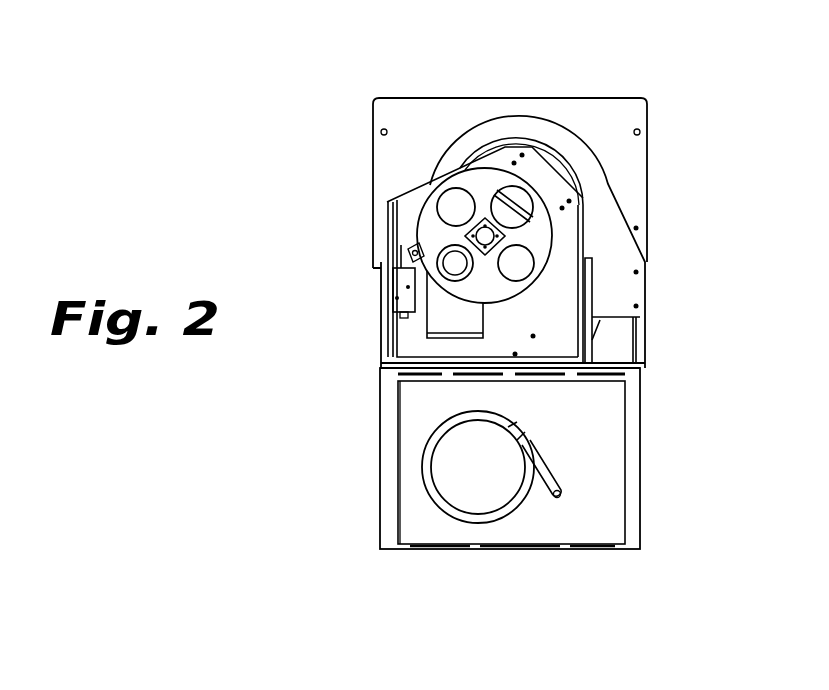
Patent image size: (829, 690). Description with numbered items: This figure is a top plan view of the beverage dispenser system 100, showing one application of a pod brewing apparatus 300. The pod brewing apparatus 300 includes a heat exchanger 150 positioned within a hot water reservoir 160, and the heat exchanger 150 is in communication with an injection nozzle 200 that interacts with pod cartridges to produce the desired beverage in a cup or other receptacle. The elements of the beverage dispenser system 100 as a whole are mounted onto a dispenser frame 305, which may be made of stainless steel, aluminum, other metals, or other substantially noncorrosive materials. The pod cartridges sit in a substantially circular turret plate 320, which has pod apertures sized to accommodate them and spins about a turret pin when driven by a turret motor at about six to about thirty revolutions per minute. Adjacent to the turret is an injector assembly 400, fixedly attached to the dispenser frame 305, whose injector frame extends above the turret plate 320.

The beverage dispenser system 100 is at (387, 57).
The pod brewing apparatus 300 is at (622, 97).
The turret plate 320 is at (485, 187).
The injector assembly 400 is at (540, 190).
The injection nozzle 200 is at (537, 211).
The dispenser frame 305 is at (643, 331).
The hot water reservoir 160 is at (641, 413).
The heat exchanger 150 is at (428, 493).